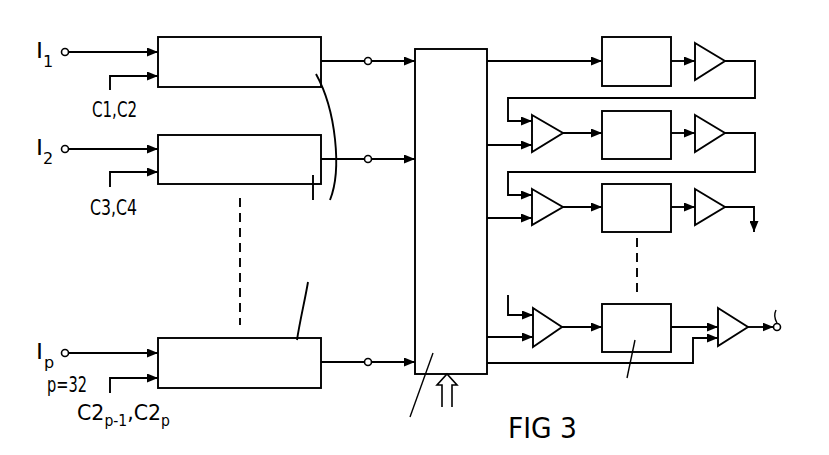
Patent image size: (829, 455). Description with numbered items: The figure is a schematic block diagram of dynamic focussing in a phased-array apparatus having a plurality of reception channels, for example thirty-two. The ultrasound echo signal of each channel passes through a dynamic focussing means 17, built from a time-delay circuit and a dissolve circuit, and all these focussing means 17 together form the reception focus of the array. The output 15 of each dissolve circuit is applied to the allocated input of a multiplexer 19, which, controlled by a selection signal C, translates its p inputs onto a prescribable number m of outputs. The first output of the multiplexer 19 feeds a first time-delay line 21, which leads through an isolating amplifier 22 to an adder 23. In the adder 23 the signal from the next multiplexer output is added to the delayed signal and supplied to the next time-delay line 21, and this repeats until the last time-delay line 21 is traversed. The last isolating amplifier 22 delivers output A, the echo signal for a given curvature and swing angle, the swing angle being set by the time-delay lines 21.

The output of the dissolve circuit 15 is at (368, 57).
The dynamic focussing means 17 is at (248, 37).
The multiplexer 19 is at (438, 49).
The time-delay line 21 is at (622, 37).
The isolating amplifier 22 is at (704, 44).
The adder 23 is at (545, 122).